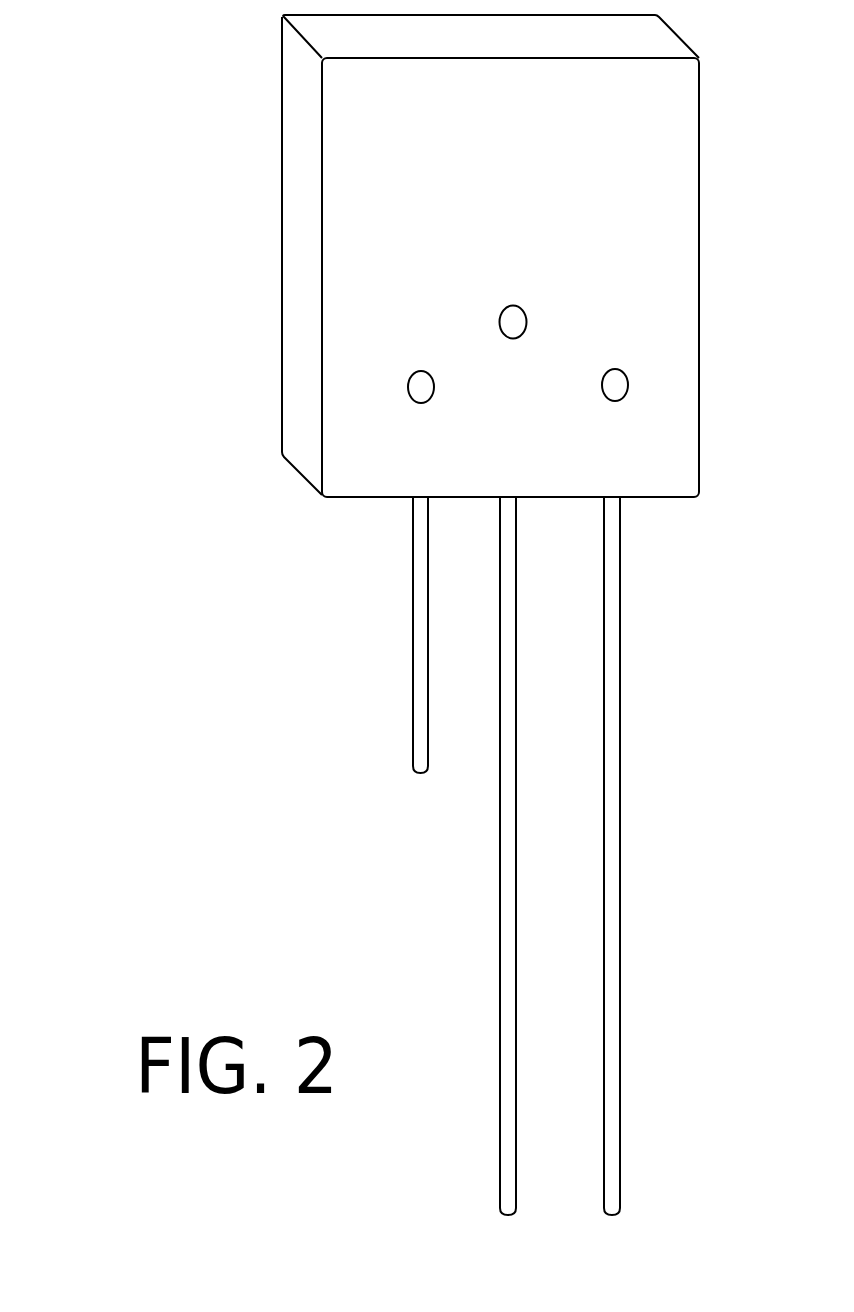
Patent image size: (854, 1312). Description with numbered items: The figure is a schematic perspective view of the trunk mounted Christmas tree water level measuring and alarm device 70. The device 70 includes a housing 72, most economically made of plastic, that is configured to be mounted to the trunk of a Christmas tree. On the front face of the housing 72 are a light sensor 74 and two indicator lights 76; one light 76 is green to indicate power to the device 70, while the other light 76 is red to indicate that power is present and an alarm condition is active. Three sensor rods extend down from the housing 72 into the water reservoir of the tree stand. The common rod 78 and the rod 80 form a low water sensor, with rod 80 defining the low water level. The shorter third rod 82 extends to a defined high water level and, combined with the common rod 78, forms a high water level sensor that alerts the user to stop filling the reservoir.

The trunk mounted Christmas tree water level measuring and alarm device 70 is at (213, 187).
The housing 72 is at (644, 148).
The light sensor 74 is at (507, 305).
The indicator lights 76 is at (417, 371).
The common sensor rod 78 is at (622, 777).
The low water level sensor rod 80 is at (498, 823).
The high water level sensor rod 82 is at (413, 672).